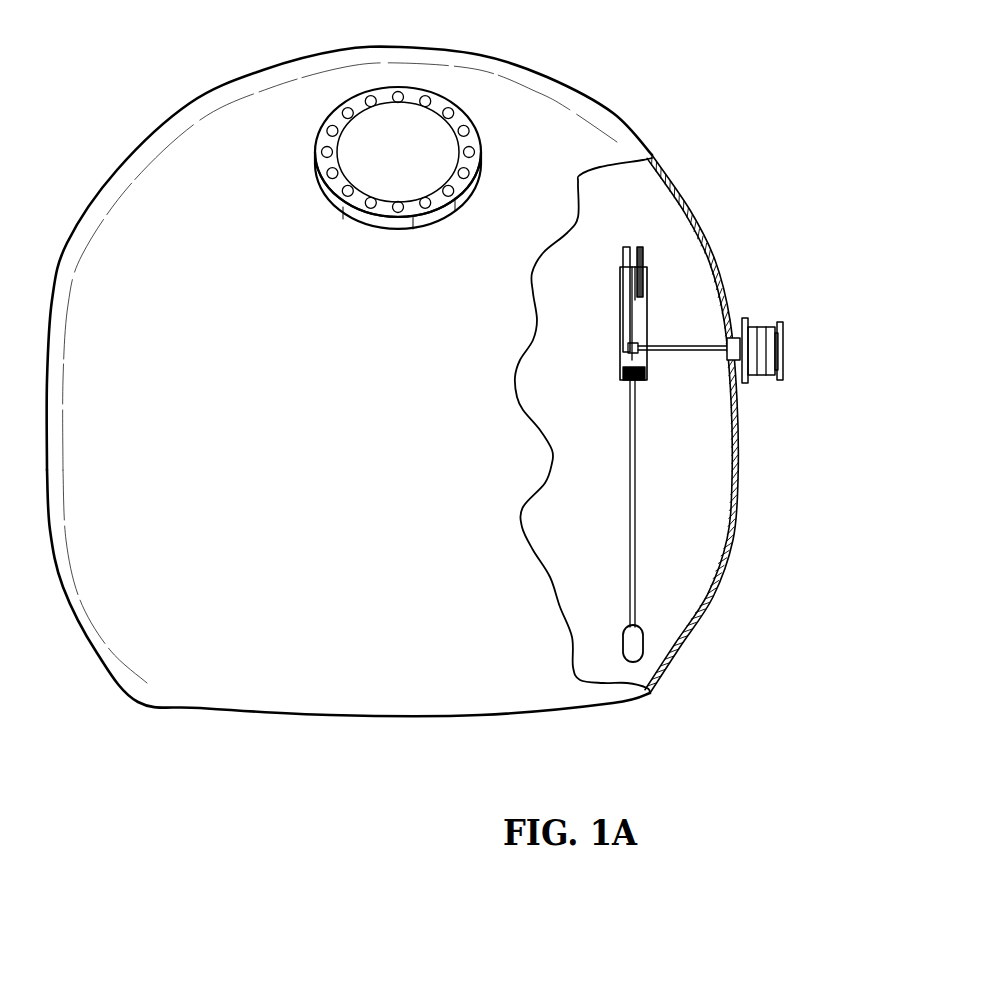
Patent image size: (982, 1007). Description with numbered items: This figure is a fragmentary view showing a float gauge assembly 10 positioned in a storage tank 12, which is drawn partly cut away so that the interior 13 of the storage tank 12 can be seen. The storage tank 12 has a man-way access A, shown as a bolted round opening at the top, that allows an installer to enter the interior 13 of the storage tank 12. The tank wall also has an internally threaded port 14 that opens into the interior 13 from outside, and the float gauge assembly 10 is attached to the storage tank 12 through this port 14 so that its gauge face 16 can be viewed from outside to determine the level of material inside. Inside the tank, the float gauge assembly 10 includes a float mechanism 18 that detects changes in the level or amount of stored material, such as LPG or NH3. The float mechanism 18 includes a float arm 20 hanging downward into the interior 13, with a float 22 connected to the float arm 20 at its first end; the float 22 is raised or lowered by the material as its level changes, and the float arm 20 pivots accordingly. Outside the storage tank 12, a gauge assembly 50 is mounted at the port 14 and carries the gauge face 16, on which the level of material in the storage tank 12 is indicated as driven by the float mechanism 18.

The man-way access A is at (443, 102).
The float gauge assembly 10 is at (760, 285).
The storage tank 12 is at (672, 168).
The interior 13 is at (673, 272).
The internally threaded port 14 is at (726, 364).
The gauge face 16 is at (783, 343).
The float mechanism 18 is at (604, 490).
The float arm 20 is at (633, 591).
The float 22 is at (639, 643).
The gauge assembly 50 is at (786, 375).